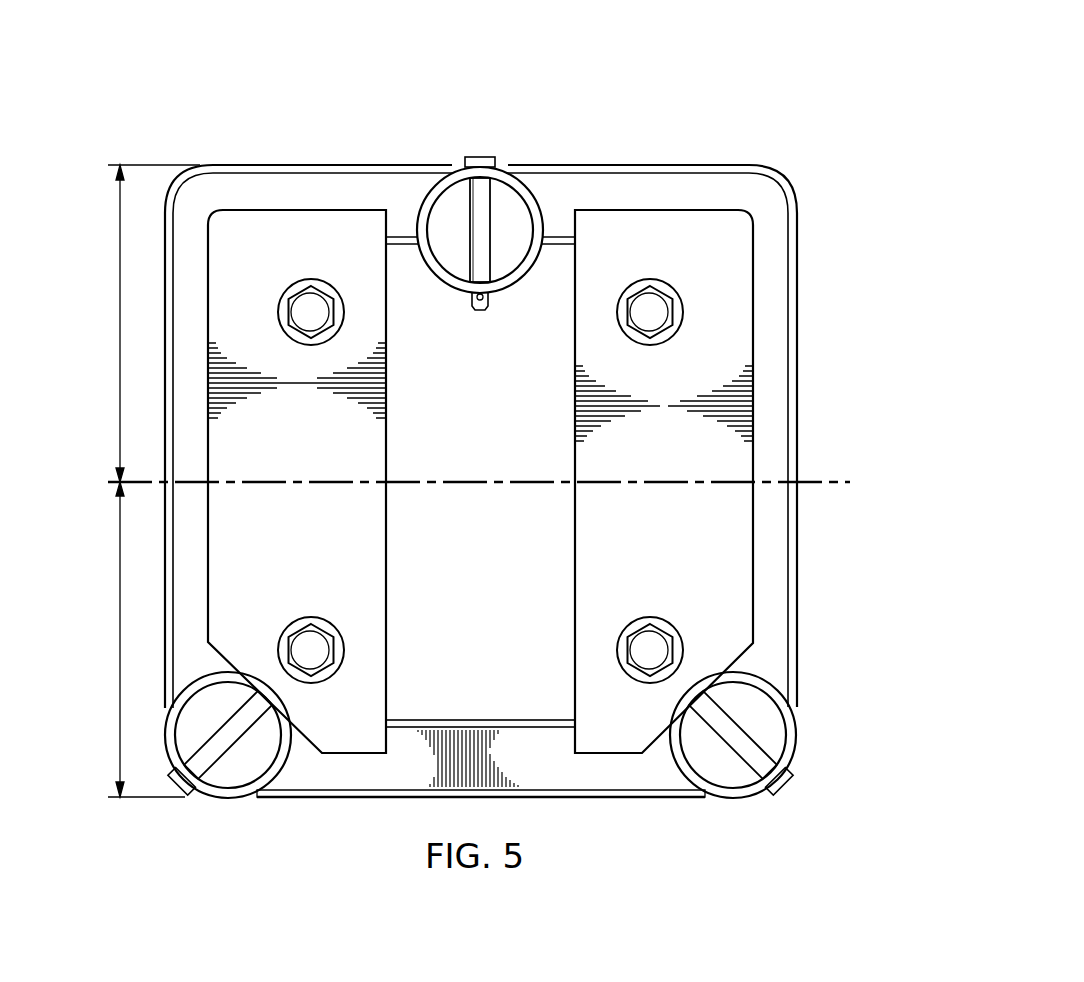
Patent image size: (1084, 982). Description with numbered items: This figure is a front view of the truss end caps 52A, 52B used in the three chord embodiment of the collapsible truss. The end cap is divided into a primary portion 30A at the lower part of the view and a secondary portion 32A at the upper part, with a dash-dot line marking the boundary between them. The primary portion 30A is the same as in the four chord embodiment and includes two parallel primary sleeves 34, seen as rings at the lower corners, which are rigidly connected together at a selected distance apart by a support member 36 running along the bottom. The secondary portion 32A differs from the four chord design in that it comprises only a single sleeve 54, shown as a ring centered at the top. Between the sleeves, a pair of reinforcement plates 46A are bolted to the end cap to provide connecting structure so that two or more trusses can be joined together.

The truss end cap 52A is at (481, 407).
The truss end cap 52B is at (481, 476).
The single sleeve 54 is at (538, 193).
The reinforcement plate 46A is at (386, 442).
The primary sleeve 34 is at (228, 800).
The support member 36 is at (378, 800).
The secondary portion 32A is at (120, 325).
The primary portion 30A is at (120, 665).